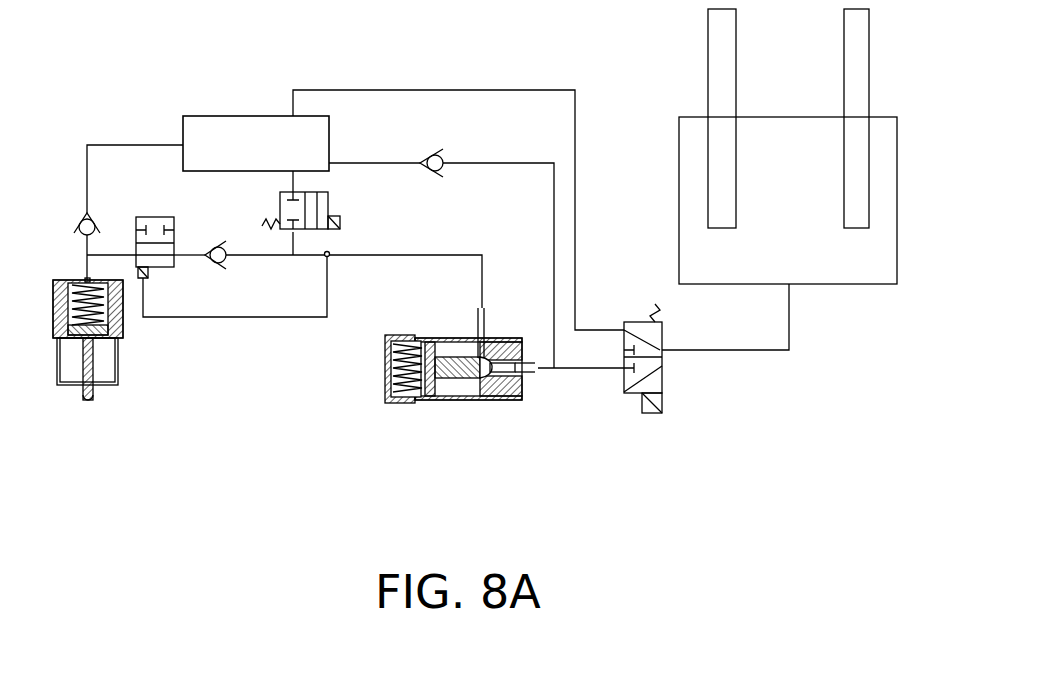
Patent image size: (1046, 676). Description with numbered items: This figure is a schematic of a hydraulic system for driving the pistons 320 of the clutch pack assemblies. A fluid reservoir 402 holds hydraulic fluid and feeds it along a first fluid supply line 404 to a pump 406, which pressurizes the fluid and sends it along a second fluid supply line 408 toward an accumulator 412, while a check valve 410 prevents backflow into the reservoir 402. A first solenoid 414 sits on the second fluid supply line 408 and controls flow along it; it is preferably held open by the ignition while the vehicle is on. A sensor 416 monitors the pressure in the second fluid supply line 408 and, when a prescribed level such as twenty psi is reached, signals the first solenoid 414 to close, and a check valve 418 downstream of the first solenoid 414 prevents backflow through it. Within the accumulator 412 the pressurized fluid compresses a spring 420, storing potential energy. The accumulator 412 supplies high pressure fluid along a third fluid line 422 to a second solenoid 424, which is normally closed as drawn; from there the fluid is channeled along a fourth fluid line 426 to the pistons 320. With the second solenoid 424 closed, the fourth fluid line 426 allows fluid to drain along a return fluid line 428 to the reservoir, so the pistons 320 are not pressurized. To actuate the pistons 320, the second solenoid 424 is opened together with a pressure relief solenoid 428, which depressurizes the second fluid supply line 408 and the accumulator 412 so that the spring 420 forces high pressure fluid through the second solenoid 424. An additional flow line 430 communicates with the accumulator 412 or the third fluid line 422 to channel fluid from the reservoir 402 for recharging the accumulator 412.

The hydraulic piston 320 is at (706, 48).
The fluid reservoir 402 is at (236, 116).
The first fluid supply line 404 is at (140, 145).
The pump 406 is at (120, 357).
The second fluid supply line 408 is at (112, 255).
The check valve 410 is at (80, 213).
The accumulator 412 is at (418, 391).
The first solenoid 414 is at (159, 217).
The sensor 416 is at (330, 256).
The check valve 418 is at (226, 267).
The spring 420 is at (385, 382).
The third fluid line 422 is at (571, 369).
The second solenoid 424 is at (630, 395).
The fourth fluid line 426 is at (752, 351).
The return fluid line / pressure relief solenoid 428 is at (340, 203).
The additional flow line 430 is at (554, 232).